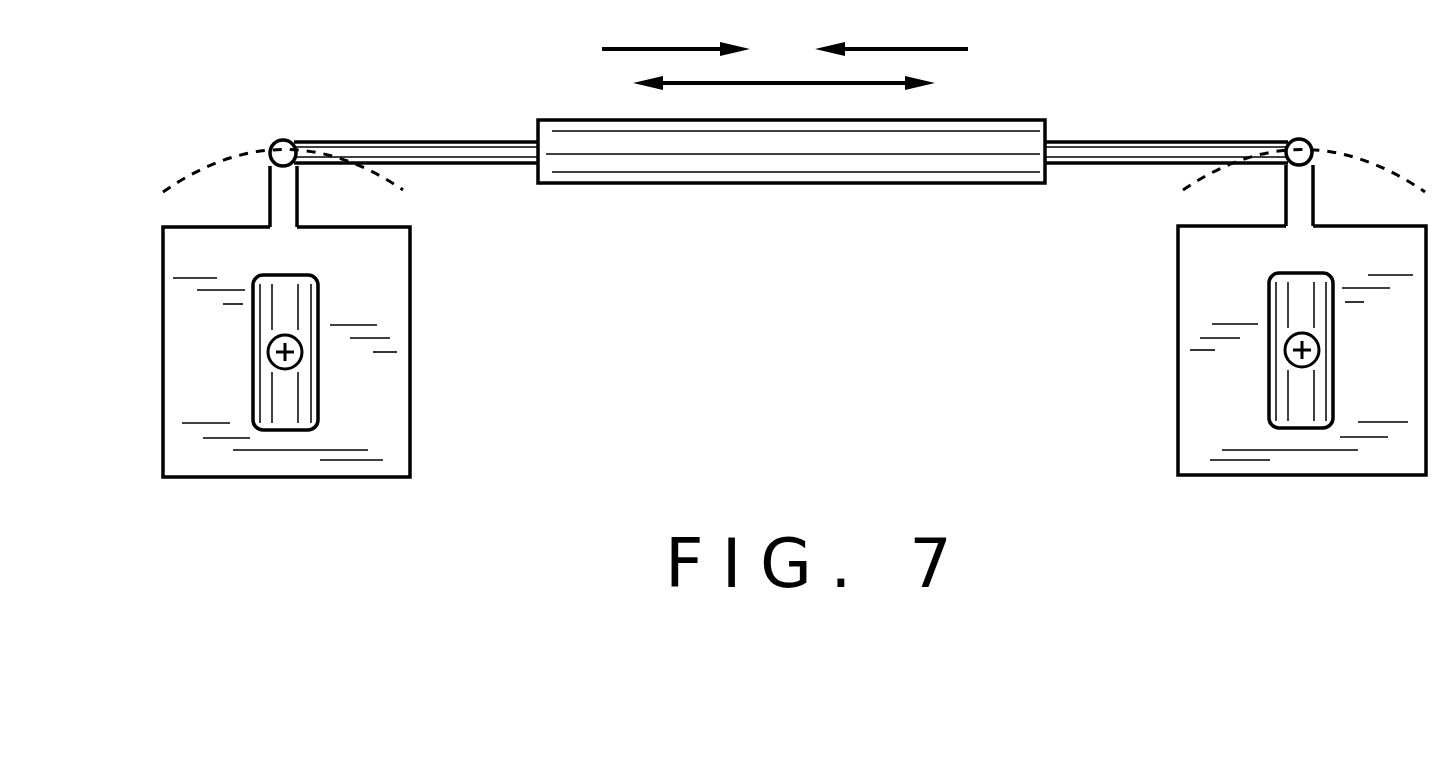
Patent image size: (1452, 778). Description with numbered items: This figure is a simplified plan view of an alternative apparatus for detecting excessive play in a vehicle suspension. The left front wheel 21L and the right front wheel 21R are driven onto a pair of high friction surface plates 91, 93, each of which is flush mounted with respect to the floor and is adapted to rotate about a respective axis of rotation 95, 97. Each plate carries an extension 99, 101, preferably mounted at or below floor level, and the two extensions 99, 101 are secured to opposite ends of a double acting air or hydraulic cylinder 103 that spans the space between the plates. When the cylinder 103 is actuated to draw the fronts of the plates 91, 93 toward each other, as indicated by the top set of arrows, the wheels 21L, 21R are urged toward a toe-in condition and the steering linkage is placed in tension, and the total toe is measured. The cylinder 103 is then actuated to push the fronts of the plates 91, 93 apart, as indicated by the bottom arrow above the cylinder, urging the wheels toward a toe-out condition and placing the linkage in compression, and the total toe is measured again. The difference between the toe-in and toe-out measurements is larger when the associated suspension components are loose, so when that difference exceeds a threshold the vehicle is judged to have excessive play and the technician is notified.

The left front wheel 21L is at (285, 303).
The right front wheel 21R is at (1300, 292).
The high friction surface plate 91 is at (410, 270).
The high friction surface plate 93 is at (1178, 277).
The axis of rotation 95 is at (293, 356).
The axis of rotation 97 is at (1290, 358).
The extension 99 is at (299, 194).
The extension 101 is at (1284, 188).
The double acting air or hydraulic cylinder 103 is at (868, 184).